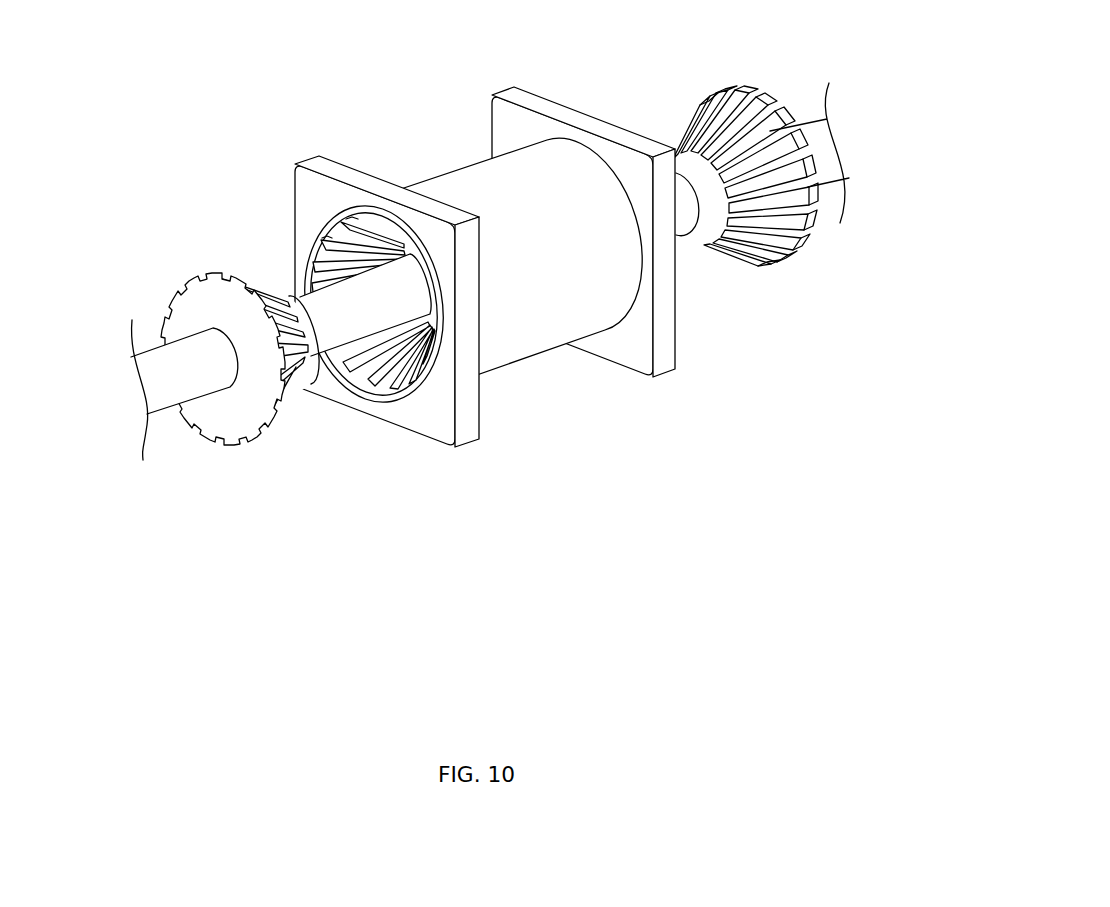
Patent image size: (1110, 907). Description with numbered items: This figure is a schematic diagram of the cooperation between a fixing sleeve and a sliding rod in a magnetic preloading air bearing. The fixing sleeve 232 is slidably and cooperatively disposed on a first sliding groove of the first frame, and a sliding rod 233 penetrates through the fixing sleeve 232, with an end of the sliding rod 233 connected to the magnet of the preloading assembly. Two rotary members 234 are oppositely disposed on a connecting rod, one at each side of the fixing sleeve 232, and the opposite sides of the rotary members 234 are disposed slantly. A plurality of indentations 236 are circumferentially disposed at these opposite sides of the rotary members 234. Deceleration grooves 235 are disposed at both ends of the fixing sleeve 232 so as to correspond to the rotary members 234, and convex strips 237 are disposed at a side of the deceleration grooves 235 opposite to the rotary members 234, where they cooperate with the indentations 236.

The fixing sleeve 232 is at (525, 330).
The sliding rod 233 is at (168, 386).
The rotary member 234 is at (193, 305).
The deceleration groove 235 is at (390, 388).
The indentation 236 is at (745, 120).
The convex strip 237 is at (333, 228).